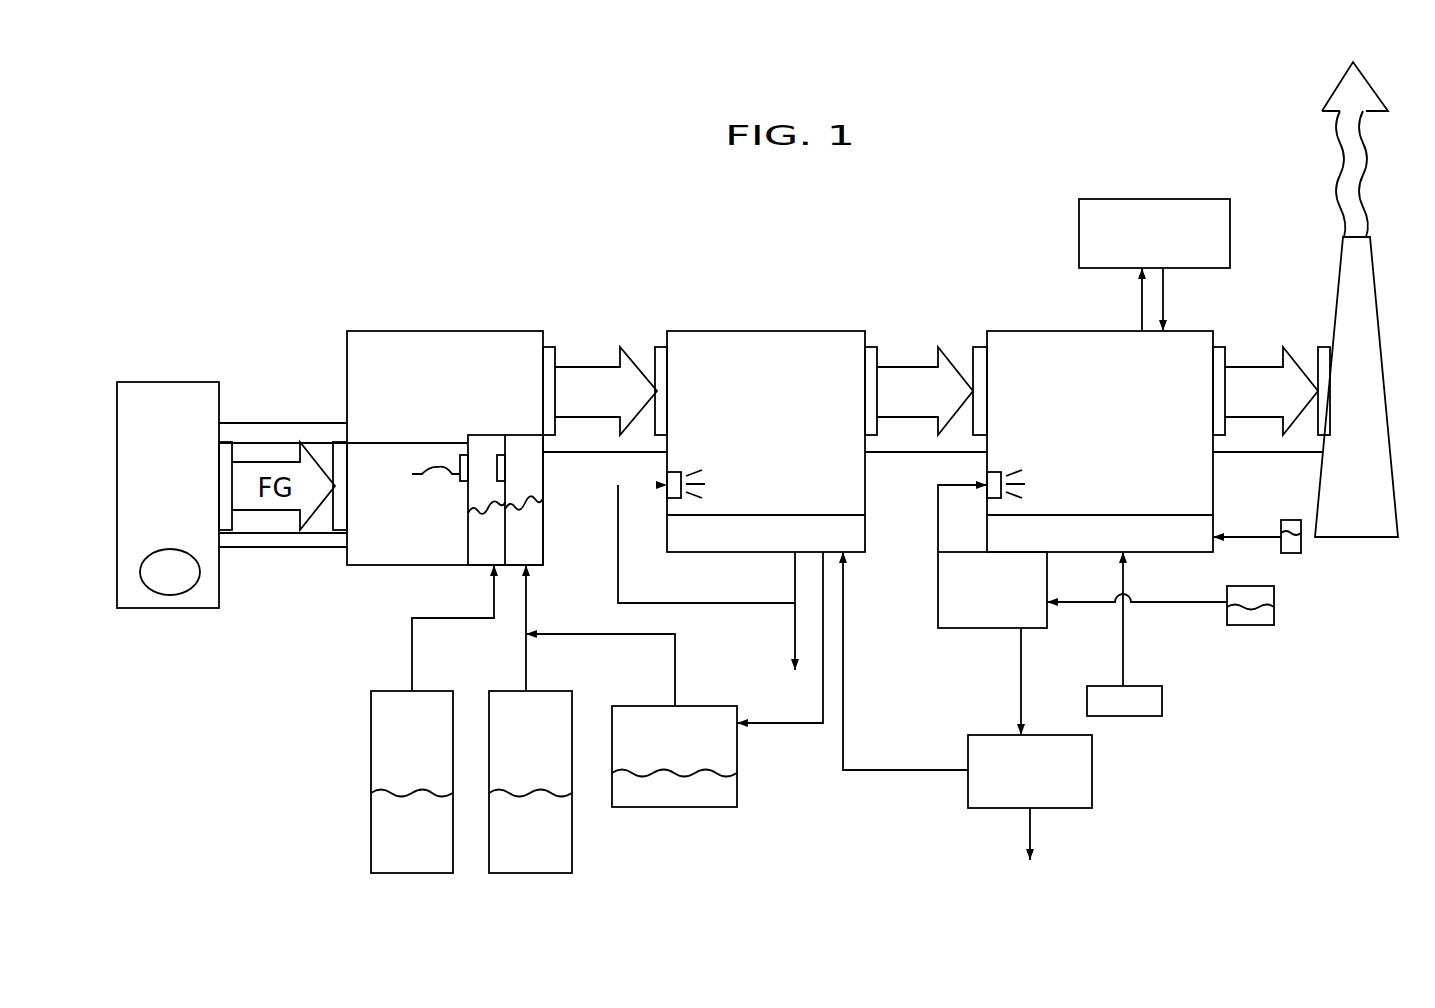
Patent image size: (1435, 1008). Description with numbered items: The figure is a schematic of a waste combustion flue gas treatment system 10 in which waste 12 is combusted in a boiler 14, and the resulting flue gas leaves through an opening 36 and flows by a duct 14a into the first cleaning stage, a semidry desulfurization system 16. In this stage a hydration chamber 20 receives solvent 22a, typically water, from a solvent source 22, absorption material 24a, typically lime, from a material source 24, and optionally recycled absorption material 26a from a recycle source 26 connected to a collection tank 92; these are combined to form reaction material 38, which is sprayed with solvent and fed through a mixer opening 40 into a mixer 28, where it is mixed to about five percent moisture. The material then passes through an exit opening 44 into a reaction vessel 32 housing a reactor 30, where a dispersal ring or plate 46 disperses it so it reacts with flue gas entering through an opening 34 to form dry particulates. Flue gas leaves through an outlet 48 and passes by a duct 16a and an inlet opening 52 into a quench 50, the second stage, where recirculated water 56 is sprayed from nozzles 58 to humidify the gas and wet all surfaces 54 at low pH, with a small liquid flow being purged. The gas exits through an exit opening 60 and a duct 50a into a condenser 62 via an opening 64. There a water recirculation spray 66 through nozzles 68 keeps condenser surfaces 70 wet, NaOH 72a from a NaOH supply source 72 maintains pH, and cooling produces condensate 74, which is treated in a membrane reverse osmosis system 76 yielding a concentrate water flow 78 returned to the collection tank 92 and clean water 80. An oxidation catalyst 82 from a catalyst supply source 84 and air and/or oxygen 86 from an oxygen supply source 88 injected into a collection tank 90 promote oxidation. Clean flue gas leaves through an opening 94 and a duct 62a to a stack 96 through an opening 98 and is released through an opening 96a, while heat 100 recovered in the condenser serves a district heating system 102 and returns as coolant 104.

The waste combustion flue gas treatment system 10 is at (822, 236).
The waste 12 is at (173, 595).
The boiler 14 is at (170, 382).
The duct 14a is at (238, 423).
The semidry desulfurization system 16 is at (413, 331).
The duct 16a is at (606, 331).
The hydration chamber 20 is at (533, 473).
The solvent source 22 is at (371, 750).
The solvent 22a is at (380, 811).
The material source 24 is at (489, 728).
The absorption material 24a is at (560, 852).
The recycle source 26 is at (612, 790).
The recycled absorption material 26a is at (655, 795).
The mixer 28 is at (482, 558).
The reactor 30 is at (372, 557).
The reaction vessel 32 is at (345, 557).
The opening 34 is at (328, 442).
The opening 36 is at (233, 447).
The reaction material 38 is at (440, 465).
The mixer opening 40 is at (491, 462).
The exit opening 44 is at (451, 453).
The dispersal ring or plate 46 is at (415, 474).
The outlet 48 is at (561, 350).
The quench 50 is at (742, 331).
The duct 50a is at (925, 331).
The inlet opening 52 is at (657, 350).
The surfaces 54 is at (865, 463).
The recirculated water 56 is at (697, 474).
The nozzles 58 is at (672, 470).
The exit opening 60 is at (881, 348).
The condenser 62 is at (1038, 331).
The duct 62a is at (1275, 331).
The opening 64 is at (963, 342).
The water recirculation spray 66 is at (1015, 470).
The nozzles 68 is at (997, 470).
The condenser surfaces 70 is at (1213, 470).
The NaOH supply source 72 is at (1247, 626).
The NaOH 72a is at (1232, 610).
The condensate 74 is at (1045, 565).
The membrane reverse osmosis system 76 is at (1090, 762).
The concentrate water flow 78 is at (912, 772).
The clean water 80 is at (1035, 824).
The oxidation catalyst 82 is at (1258, 537).
The catalyst supply source 84 is at (1298, 543).
The air and/or oxygen 86 is at (1123, 662).
The oxygen supply source 88 is at (1162, 698).
The collection tank 90 is at (990, 552).
The collection tank 92 is at (708, 538).
The opening 94 is at (1233, 352).
The stack 96 is at (1380, 345).
The opening 96a is at (1370, 233).
The opening 98 is at (1318, 352).
The heat 100 is at (1142, 312).
The district heating system 102 is at (1230, 215).
The coolant 104 is at (1163, 288).